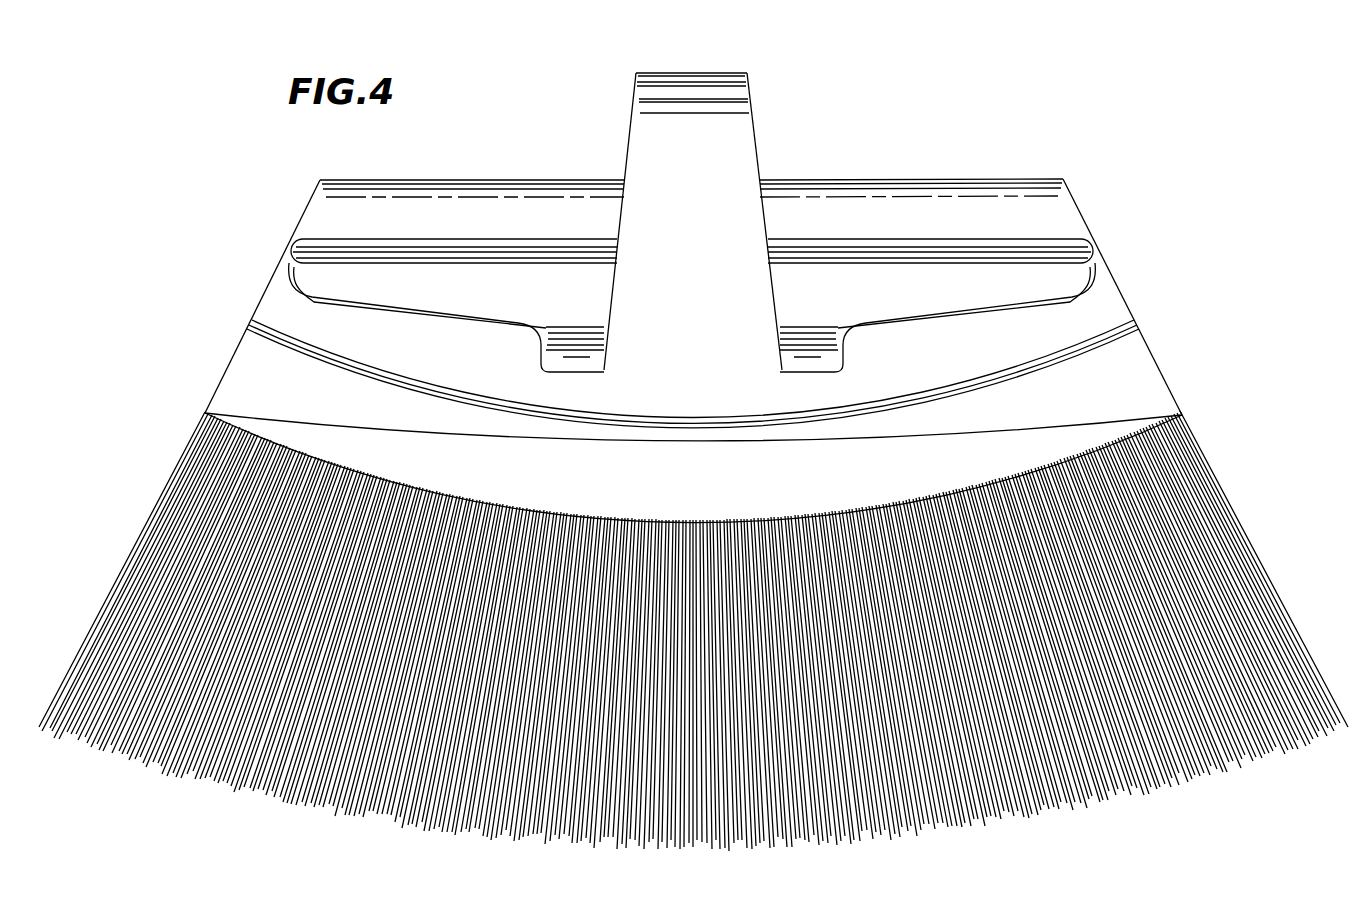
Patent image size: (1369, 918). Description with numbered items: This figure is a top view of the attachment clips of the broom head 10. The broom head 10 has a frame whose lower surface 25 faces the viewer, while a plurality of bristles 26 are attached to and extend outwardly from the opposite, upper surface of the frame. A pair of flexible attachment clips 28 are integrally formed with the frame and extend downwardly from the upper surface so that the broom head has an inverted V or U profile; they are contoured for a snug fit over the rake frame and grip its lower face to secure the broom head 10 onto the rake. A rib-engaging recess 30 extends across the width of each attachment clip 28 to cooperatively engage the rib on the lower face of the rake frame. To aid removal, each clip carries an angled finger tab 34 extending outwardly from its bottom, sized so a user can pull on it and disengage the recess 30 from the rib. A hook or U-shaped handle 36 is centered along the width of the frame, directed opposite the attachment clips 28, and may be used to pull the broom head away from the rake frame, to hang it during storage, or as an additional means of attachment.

The broom head 10 is at (1168, 359).
The lower surface 25 is at (716, 349).
The bristles 26 is at (145, 543).
The attachment clips 28 is at (338, 282).
The rib-engaging recess 30 is at (292, 247).
The finger tab 34 is at (603, 352).
The handle 36 is at (717, 73).